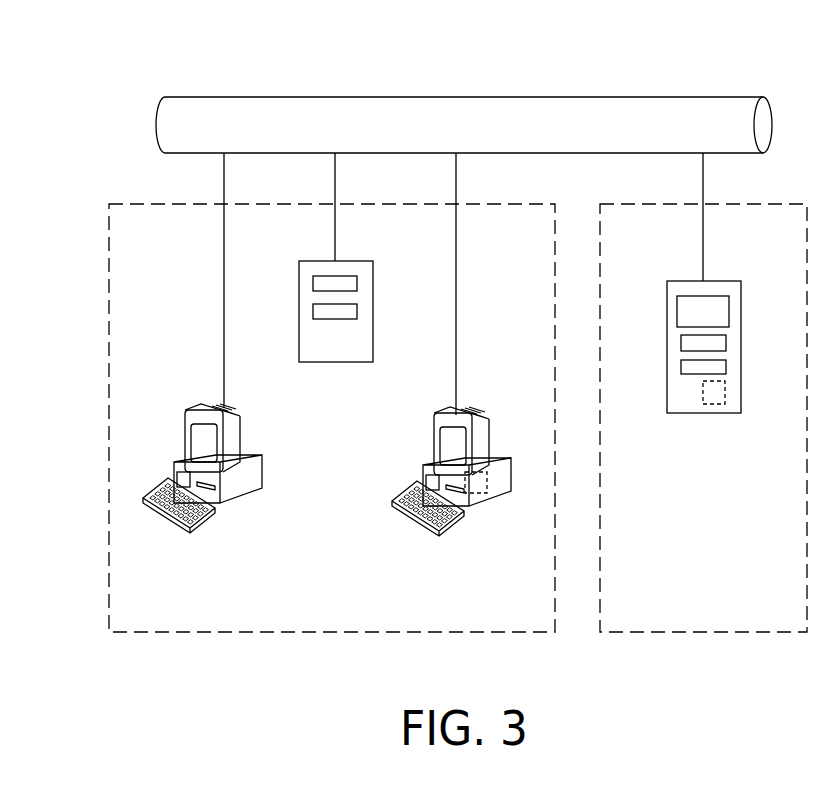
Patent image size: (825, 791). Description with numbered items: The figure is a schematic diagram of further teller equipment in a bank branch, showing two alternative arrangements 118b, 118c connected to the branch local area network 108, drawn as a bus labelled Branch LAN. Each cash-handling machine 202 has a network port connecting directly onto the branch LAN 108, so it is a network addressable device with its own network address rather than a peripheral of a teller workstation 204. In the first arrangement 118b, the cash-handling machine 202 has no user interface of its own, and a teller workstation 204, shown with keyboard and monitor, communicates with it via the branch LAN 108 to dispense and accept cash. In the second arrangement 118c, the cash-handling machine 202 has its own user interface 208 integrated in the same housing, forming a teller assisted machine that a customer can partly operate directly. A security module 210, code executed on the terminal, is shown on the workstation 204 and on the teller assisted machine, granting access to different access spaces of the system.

The local area network 108 is at (457, 96).
The alternative arrangement for teller equipment 118b is at (348, 632).
The alternative arrangement for teller equipment 118c is at (708, 632).
The cash-handling machine 202 is at (548, 364).
The teller workstation 204 is at (413, 522).
The user interface 208 is at (729, 313).
The security module 210 is at (478, 488).